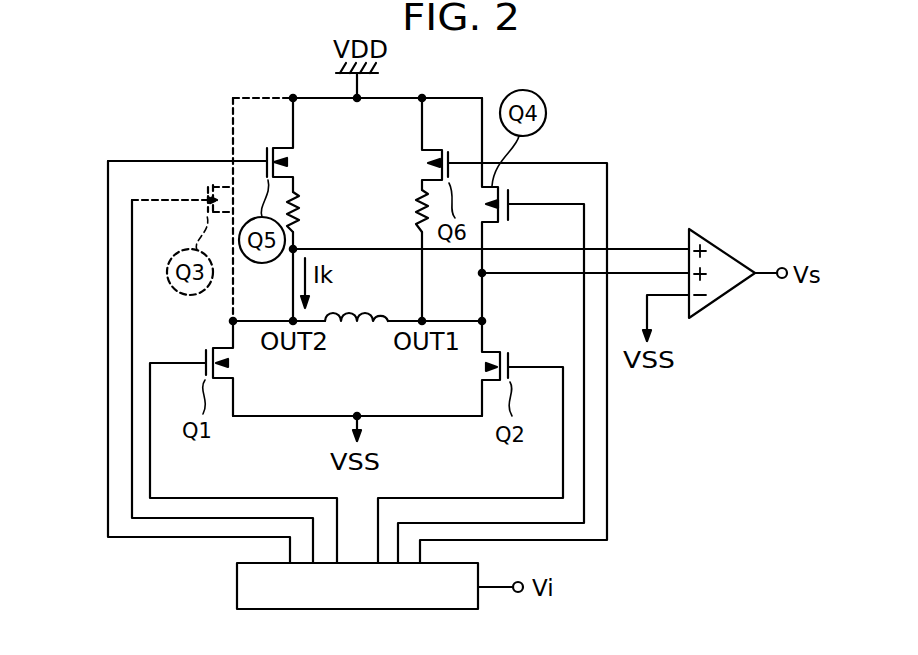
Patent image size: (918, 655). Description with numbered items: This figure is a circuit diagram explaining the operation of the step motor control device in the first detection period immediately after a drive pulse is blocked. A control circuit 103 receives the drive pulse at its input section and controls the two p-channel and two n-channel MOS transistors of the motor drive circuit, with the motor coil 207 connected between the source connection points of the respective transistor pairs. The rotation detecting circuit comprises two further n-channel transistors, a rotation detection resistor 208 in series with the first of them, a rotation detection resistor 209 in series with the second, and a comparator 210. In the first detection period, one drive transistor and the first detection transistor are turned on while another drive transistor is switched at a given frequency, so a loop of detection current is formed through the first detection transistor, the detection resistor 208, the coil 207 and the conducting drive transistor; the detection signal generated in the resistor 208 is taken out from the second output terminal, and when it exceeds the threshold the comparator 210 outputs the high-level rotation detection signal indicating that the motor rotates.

The control circuit 103 is at (237, 590).
The coil 207 is at (362, 334).
The rotation detection resistor 208 is at (298, 205).
The rotation detection resistor 209 is at (416, 212).
The comparator 210 is at (716, 297).